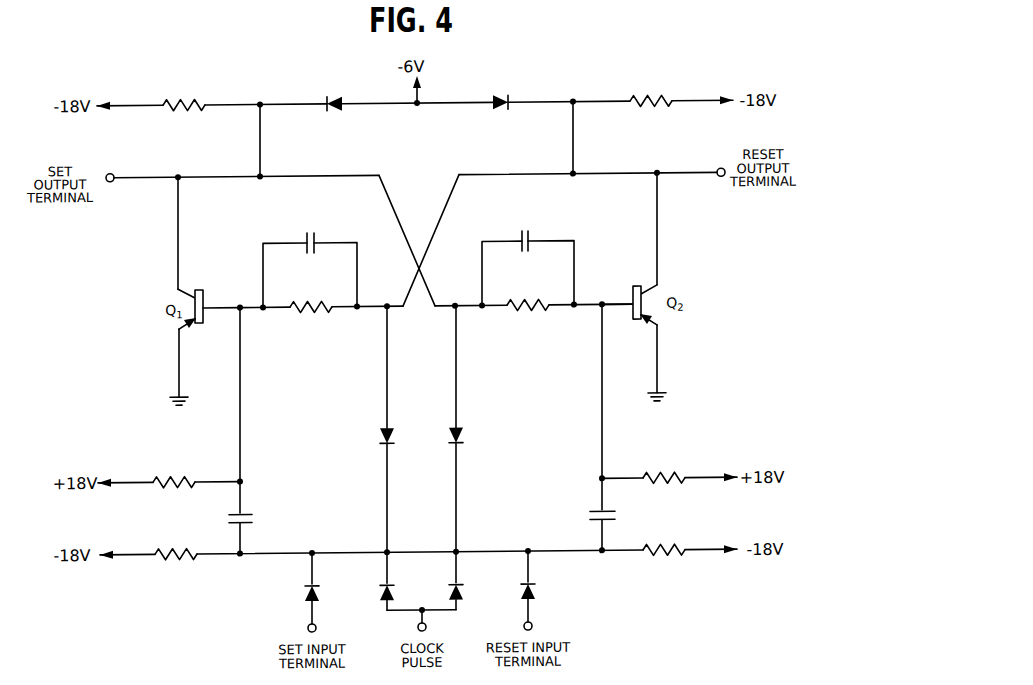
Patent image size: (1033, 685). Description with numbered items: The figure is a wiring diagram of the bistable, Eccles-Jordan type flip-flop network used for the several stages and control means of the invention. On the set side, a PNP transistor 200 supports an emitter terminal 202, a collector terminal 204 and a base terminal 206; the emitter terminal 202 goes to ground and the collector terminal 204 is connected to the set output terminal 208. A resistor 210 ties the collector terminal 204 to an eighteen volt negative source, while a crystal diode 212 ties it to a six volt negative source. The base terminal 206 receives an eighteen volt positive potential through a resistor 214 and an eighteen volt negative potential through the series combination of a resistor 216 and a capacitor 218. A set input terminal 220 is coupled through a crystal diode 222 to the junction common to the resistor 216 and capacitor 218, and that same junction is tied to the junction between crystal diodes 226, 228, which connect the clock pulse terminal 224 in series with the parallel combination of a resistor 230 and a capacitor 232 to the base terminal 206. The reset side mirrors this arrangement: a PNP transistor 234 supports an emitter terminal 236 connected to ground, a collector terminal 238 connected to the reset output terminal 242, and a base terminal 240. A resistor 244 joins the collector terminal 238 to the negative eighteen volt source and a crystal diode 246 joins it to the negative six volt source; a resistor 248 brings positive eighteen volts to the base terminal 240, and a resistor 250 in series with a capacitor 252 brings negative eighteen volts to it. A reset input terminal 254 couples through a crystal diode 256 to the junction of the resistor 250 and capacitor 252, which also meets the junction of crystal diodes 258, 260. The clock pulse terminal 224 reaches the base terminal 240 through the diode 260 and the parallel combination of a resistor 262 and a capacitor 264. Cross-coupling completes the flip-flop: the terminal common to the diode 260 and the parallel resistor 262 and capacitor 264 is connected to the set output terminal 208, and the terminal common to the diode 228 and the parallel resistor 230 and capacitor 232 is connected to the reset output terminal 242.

The transistor 200 is at (198, 326).
The emitter terminal 202 is at (178, 367).
The collector terminal 204 is at (181, 255).
The base terminal 206 is at (218, 303).
The set output terminal 208 is at (113, 171).
The resistor 210 is at (192, 97).
The crystal diode 212 is at (328, 96).
The resistor 214 is at (178, 474).
The resistor 216 is at (183, 548).
The capacitor 218 is at (253, 517).
The set input terminal 220 is at (307, 625).
The crystal diode 222 is at (304, 590).
The clock pulse terminal 224 is at (417, 627).
The crystal diode 226 is at (384, 590).
The crystal diode 228 is at (380, 437).
The resistor 230 is at (308, 316).
The capacitor 232 is at (306, 230).
The transistor 234 is at (635, 323).
The emitter terminal 236 is at (659, 365).
The collector terminal 238 is at (662, 254).
The base terminal 240 is at (614, 301).
The reset output terminal 242 is at (720, 170).
The resistor 244 is at (651, 97).
The crystal diode 246 is at (505, 94).
The resistor 248 is at (668, 472).
The resistor 250 is at (668, 545).
The capacitor 252 is at (588, 516).
The reset input terminal 254 is at (533, 626).
The crystal diode 256 is at (540, 590).
The crystal diode 258 is at (461, 590).
The crystal diode 260 is at (464, 437).
The resistor 262 is at (527, 315).
The capacitor 264 is at (530, 230).